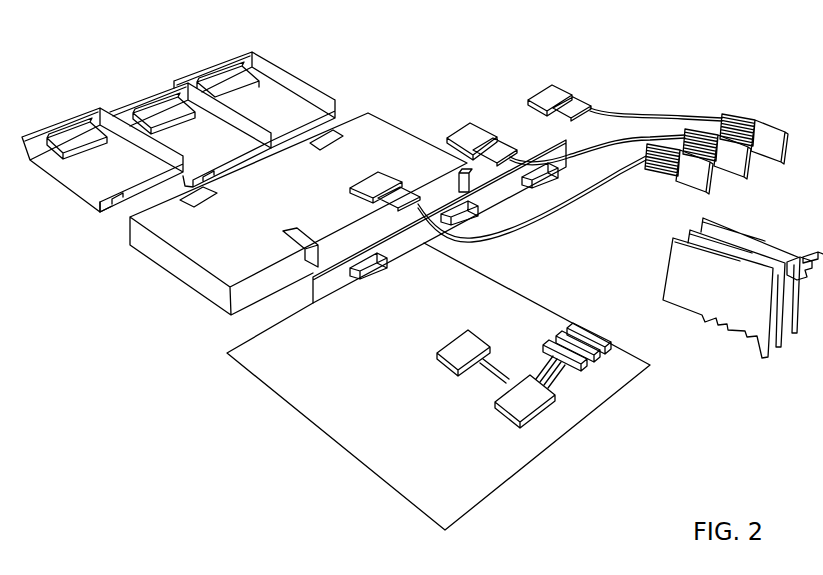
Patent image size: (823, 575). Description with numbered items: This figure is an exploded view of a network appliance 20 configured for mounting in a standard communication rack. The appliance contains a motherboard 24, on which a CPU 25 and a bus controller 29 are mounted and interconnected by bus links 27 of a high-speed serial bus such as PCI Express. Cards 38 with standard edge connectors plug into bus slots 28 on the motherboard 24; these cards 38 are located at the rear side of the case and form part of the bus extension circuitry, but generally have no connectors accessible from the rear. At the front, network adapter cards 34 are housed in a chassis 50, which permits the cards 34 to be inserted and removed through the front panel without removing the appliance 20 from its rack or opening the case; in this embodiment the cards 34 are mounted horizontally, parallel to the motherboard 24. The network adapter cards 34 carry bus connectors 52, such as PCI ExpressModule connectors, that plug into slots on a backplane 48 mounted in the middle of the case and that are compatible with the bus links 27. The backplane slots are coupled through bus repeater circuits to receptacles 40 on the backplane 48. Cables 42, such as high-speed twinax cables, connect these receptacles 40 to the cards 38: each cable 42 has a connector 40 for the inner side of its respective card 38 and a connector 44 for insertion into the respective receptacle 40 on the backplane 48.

The network appliance 20 is at (75, 59).
The network adapter cards 34 is at (80, 111).
The bus connectors 52 is at (121, 211).
The chassis 50 is at (175, 268).
The backplane 48 is at (336, 293).
The connector 44 is at (383, 184).
The cables 42 is at (645, 108).
The receptacles 40 is at (384, 272).
The cards 38 is at (748, 260).
The motherboard 24 is at (606, 398).
The CPU 25 is at (447, 342).
The bus controller 29 is at (510, 423).
The bus links 27 is at (553, 362).
The bus slots 28 is at (545, 342).